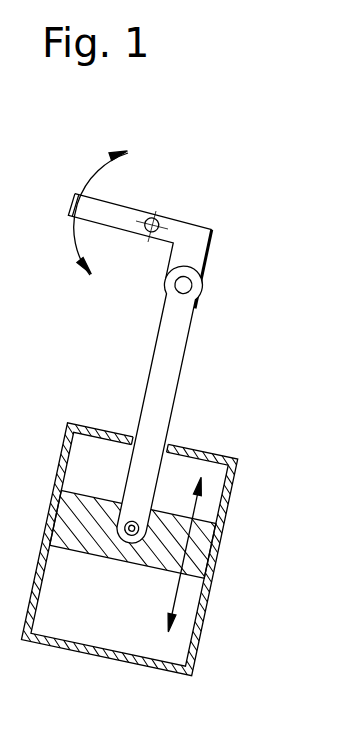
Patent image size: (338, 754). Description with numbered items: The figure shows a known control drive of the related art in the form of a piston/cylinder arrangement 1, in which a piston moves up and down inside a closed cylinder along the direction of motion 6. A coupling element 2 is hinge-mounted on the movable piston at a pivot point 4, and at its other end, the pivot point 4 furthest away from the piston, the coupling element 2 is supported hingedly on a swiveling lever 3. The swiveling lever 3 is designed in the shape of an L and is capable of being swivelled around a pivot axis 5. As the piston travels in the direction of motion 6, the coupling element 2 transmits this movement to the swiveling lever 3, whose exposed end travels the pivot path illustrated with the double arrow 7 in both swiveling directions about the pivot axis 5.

The piston/cylinder arrangement 1 is at (227, 420).
The coupling element 2 is at (162, 377).
The swiveling lever 3 is at (192, 235).
The pivot point 4 is at (184, 285).
The pivot axis 5 is at (157, 218).
The direction of motion 6 is at (175, 590).
The double arrow 7 is at (87, 190).